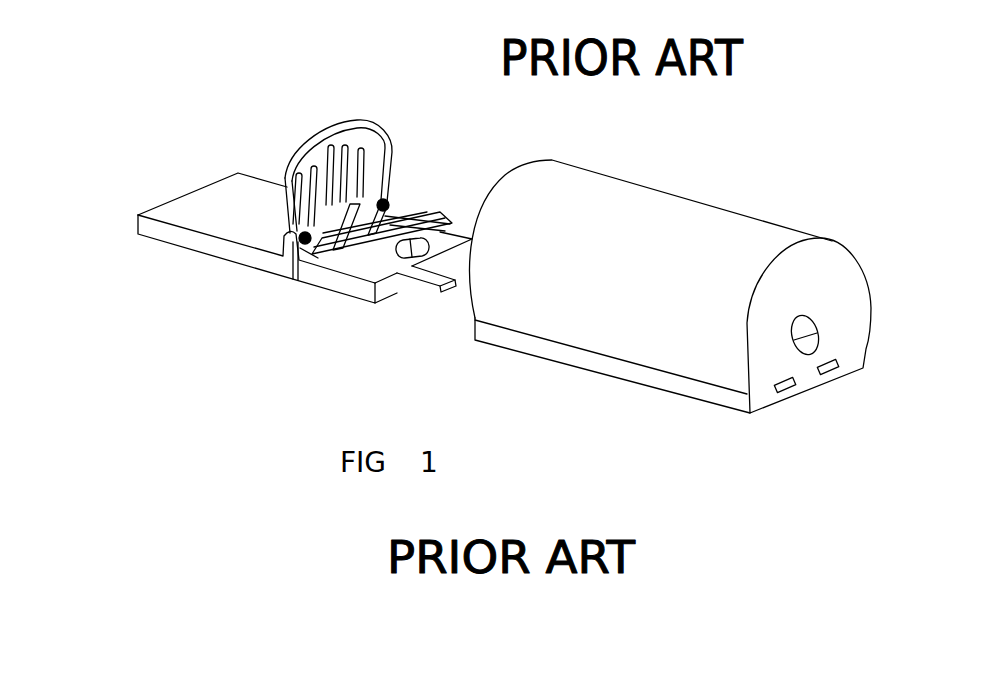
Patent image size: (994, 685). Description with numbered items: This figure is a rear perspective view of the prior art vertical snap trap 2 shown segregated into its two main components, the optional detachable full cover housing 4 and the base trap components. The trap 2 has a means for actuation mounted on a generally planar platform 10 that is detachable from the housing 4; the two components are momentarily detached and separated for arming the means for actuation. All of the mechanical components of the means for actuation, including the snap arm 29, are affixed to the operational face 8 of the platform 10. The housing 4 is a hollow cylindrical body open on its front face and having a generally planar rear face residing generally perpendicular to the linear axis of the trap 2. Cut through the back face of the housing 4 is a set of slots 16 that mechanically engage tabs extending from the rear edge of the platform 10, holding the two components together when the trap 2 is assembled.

The trap 2 is at (162, 348).
The housing 4 is at (742, 230).
The operational face 8 is at (207, 198).
The platform 10 is at (152, 230).
The slots 16 is at (838, 368).
The snap arm 29 is at (370, 118).